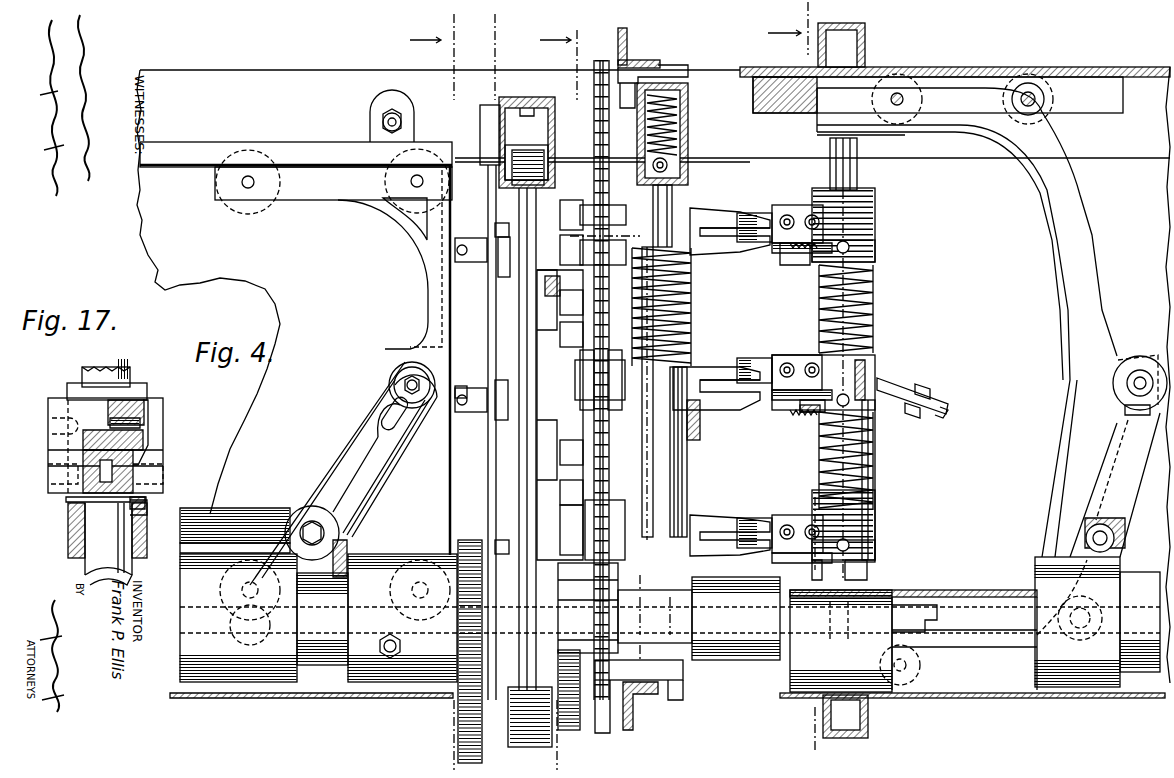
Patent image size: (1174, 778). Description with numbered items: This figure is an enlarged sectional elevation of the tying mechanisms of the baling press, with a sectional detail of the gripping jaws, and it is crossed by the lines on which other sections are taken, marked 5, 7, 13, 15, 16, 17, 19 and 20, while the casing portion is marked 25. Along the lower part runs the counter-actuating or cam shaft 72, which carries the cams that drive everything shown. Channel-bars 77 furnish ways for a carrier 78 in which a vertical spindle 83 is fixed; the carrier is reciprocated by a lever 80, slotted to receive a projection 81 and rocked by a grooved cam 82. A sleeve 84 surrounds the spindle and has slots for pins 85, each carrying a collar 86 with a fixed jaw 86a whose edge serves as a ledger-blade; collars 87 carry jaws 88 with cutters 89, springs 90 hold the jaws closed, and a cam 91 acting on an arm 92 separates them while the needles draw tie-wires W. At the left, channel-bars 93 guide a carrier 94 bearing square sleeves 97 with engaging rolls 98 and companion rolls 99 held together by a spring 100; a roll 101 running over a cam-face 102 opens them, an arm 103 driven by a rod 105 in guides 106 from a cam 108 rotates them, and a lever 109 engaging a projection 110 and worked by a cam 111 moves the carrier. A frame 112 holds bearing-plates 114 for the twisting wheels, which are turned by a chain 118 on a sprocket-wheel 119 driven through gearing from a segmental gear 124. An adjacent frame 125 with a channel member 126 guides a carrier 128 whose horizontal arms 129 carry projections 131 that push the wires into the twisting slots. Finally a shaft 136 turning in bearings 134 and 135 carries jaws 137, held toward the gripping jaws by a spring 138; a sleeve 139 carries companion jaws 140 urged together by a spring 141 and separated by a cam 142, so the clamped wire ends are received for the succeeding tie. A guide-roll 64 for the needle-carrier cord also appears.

In FIG. 4, the section line 5 5 is at (561, 391).
In FIG. 4, the section line 7 7 is at (818, 376).
In FIG. 4, the section line 13 13 is at (525, 463).
In FIG. 4, the section line 15 is at (496, 50).
In FIG. 4, the section line 16 is at (436, 385).
In FIG. 4, the section line 17 17 is at (836, 530).
In FIG. 4, the section line 19 19 is at (600, 225).
In FIG. 4, the section line 20 is at (670, 616).
In FIG. 4, the frame 25 is at (653, 292).
In FIG. 4, the guide-roll 64 is at (946, 403).
In FIG. 4, the cam-shaft 72 is at (960, 590).
In FIG. 4, the channel-bars 77 is at (940, 69).
In FIG. 4, the carrier 78 is at (1087, 270).
In FIG. 4, the lever 80 is at (1090, 477).
In FIG. 4, the projection 81 is at (1128, 383).
In FIG. 4, the cam 82 is at (1100, 692).
In FIG. 4, the vertical spindle 83 is at (858, 170).
In FIG. 17, the vertical spindle 83 is at (106, 374).
In FIG. 4, the sleeve 84 is at (818, 452).
In FIG. 17, the sleeve 84 is at (70, 540).
In FIG. 4, the pins 85 is at (860, 247).
In FIG. 4, the collar 86 is at (877, 259).
In FIG. 4, the fixed jaw 86a is at (780, 418).
In FIG. 17, the fixed jaw 86a is at (70, 500).
In FIG. 4, the collars 87 is at (877, 212).
In FIG. 4, the jaws 88 is at (787, 356).
In FIG. 17, the jaws 88 is at (82, 447).
In FIG. 4, the blade or cutter 89 is at (800, 412).
In FIG. 17, the blade or cutter 89 is at (140, 447).
In FIG. 4, the springs 90 is at (878, 312).
In FIG. 4, the cam 91 is at (800, 694).
In FIG. 4, the arm 92 is at (878, 476).
In FIG. 4, the channel-bars 93 is at (293, 146).
In FIG. 17, the channel-bars 93 is at (143, 546).
In FIG. 4, the carrier 94 is at (427, 290).
In FIG. 4, the sleeve 97 is at (741, 258).
In FIG. 4, the engaging-roll 98 is at (766, 213).
In FIG. 4, the companion engaging roll 99 is at (739, 214).
In FIG. 4, the spring 100 is at (803, 266).
In FIG. 4, the roll 101 is at (462, 258).
In FIG. 4, the cam-face 102 is at (470, 386).
In FIG. 4, the arm 103 is at (494, 228).
In FIG. 4, the rod 105 is at (494, 323).
In FIG. 4, the guides 106 is at (480, 127).
In FIG. 4, the cam 108 is at (463, 698).
In FIG. 4, the lever 109 is at (336, 456).
In FIG. 4, the projection 110 is at (410, 382).
In FIG. 4, the cam 111 is at (238, 698).
In FIG. 4, the frame 112 is at (630, 44).
In FIG. 4, the bearing-plates 114 is at (598, 370).
In FIG. 4, the chain 118 is at (600, 305).
In FIG. 4, the sprocket-wheel 119 is at (600, 127).
In FIG. 4, the segmental gear 124 is at (580, 718).
In FIG. 4, the frame 125 is at (596, 336).
In FIG. 4, the channel member 126 is at (530, 95).
In FIG. 4, the carrier 128 is at (538, 460).
In FIG. 4, the horizontal arms 129 is at (568, 276).
In FIG. 4, the projections 131 is at (545, 238).
In FIG. 4, the upper bearing 134 is at (656, 76).
In FIG. 4, the lower bearing 135 is at (672, 690).
In FIG. 4, the shaft 136 is at (673, 199).
In FIG. 4, the jaws 137 is at (715, 410).
In FIG. 4, the spring 138 is at (688, 129).
In FIG. 4, the sleeve 139 is at (690, 471).
In FIG. 4, the companion jaws 140 is at (740, 375).
In FIG. 4, the spring 141 is at (696, 326).
In FIG. 4, the cam 142 is at (676, 608).
In FIG. 4, the tie-wires W is at (760, 357).